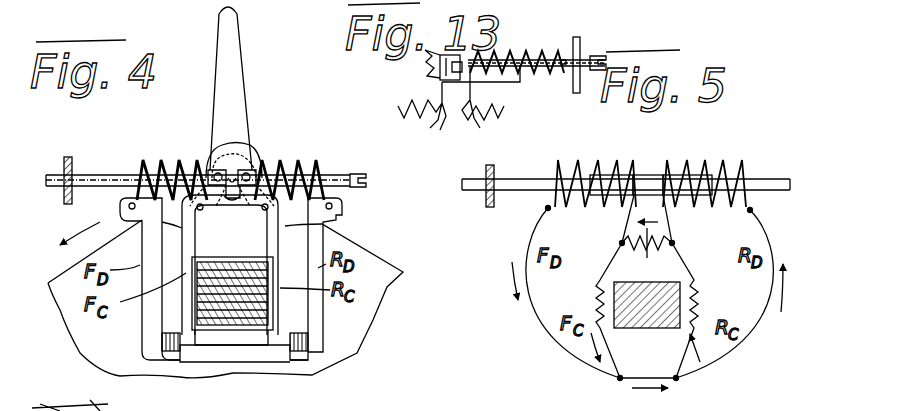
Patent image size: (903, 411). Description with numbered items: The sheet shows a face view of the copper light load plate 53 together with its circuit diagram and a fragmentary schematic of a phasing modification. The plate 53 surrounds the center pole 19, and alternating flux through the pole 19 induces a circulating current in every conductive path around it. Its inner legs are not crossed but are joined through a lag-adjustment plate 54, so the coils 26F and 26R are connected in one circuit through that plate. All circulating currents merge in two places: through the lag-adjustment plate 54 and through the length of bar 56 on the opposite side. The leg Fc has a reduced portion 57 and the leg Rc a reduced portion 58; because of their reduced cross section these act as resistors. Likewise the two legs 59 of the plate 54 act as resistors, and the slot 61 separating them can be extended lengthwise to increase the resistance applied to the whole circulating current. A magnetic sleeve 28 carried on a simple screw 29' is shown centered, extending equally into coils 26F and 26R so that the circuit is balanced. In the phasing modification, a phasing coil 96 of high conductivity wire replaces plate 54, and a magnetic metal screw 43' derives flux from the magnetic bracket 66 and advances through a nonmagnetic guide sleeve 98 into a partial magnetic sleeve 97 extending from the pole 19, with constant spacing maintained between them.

In FIG. 4, the center pole 19 is at (246, 252).
In FIG. 13, the center pole 19 is at (440, 64).
In FIG. 5, the center pole 19 is at (648, 332).
In FIG. 4, the front coil 26F is at (162, 170).
In FIG. 13, the front coil 26F is at (446, 122).
In FIG. 5, the front coil 26F is at (590, 176).
In FIG. 4, the rear coil 26R is at (300, 168).
In FIG. 13, the rear coil 26R is at (494, 118).
In FIG. 5, the rear coil 26R is at (706, 174).
In FIG. 4, the magnetic sleeve 28 is at (248, 162).
In FIG. 5, the magnetic sleeve 28 is at (648, 176).
In FIG. 4, the screw 29' is at (219, 189).
In FIG. 13, the magnetic metal screw 43' is at (579, 79).
In FIG. 4, the plate 53 is at (338, 302).
In FIG. 4, the lag-adjustment plate 54 is at (242, 52).
In FIG. 5, the lag-adjustment plate 54 is at (647, 250).
In FIG. 4, the bar 56 is at (245, 355).
In FIG. 4, the reduced portion 57 is at (188, 307).
In FIG. 5, the reduced portion 57 is at (598, 297).
In FIG. 4, the reduced portion 58 is at (290, 317).
In FIG. 5, the reduced portion 58 is at (698, 297).
In FIG. 4, the legs 59 is at (212, 166).
In FIG. 4, the slot 61 is at (228, 152).
In FIG. 13, the magnetic bracket 66 is at (548, 58).
In FIG. 13, the phasing coil 96 is at (494, 74).
In FIG. 13, the magnetic sleeve 97 is at (458, 64).
In FIG. 13, the nonmagnetic guide sleeve 98 is at (578, 52).